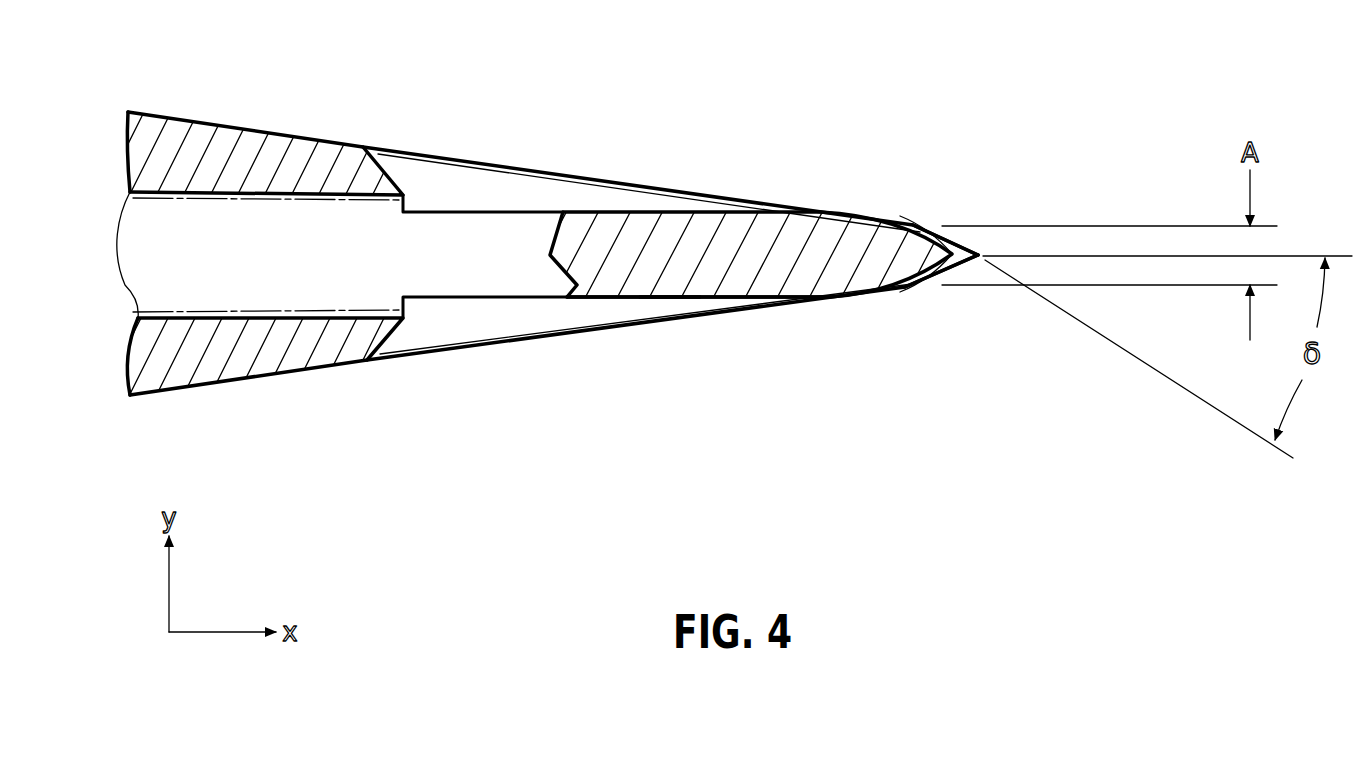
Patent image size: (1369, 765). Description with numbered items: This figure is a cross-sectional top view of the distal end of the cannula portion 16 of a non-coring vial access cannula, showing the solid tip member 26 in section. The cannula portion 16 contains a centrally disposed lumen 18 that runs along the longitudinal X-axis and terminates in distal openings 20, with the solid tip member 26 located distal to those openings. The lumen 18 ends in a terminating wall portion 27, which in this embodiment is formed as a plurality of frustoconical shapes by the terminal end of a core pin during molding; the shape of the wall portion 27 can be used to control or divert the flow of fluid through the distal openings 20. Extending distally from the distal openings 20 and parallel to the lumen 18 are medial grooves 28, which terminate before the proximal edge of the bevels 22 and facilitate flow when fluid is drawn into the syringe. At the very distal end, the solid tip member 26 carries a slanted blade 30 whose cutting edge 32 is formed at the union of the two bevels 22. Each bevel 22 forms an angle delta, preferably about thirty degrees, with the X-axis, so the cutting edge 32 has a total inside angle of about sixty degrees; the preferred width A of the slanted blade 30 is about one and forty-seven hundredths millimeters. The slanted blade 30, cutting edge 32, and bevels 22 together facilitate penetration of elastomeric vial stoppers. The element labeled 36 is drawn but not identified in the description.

The cannula portion 16 is at (258, 132).
The centrally disposed lumen 18 is at (303, 228).
The distal openings 20 is at (445, 275).
The bevels 22 is at (930, 230).
The solid tip member 26 is at (645, 227).
The terminating wall portion 27 is at (593, 297).
The medial grooves 28 is at (438, 197).
The slanted blade 30 is at (923, 270).
The cutting edge 32 is at (982, 247).
The insert lower edge 36 is at (695, 282).